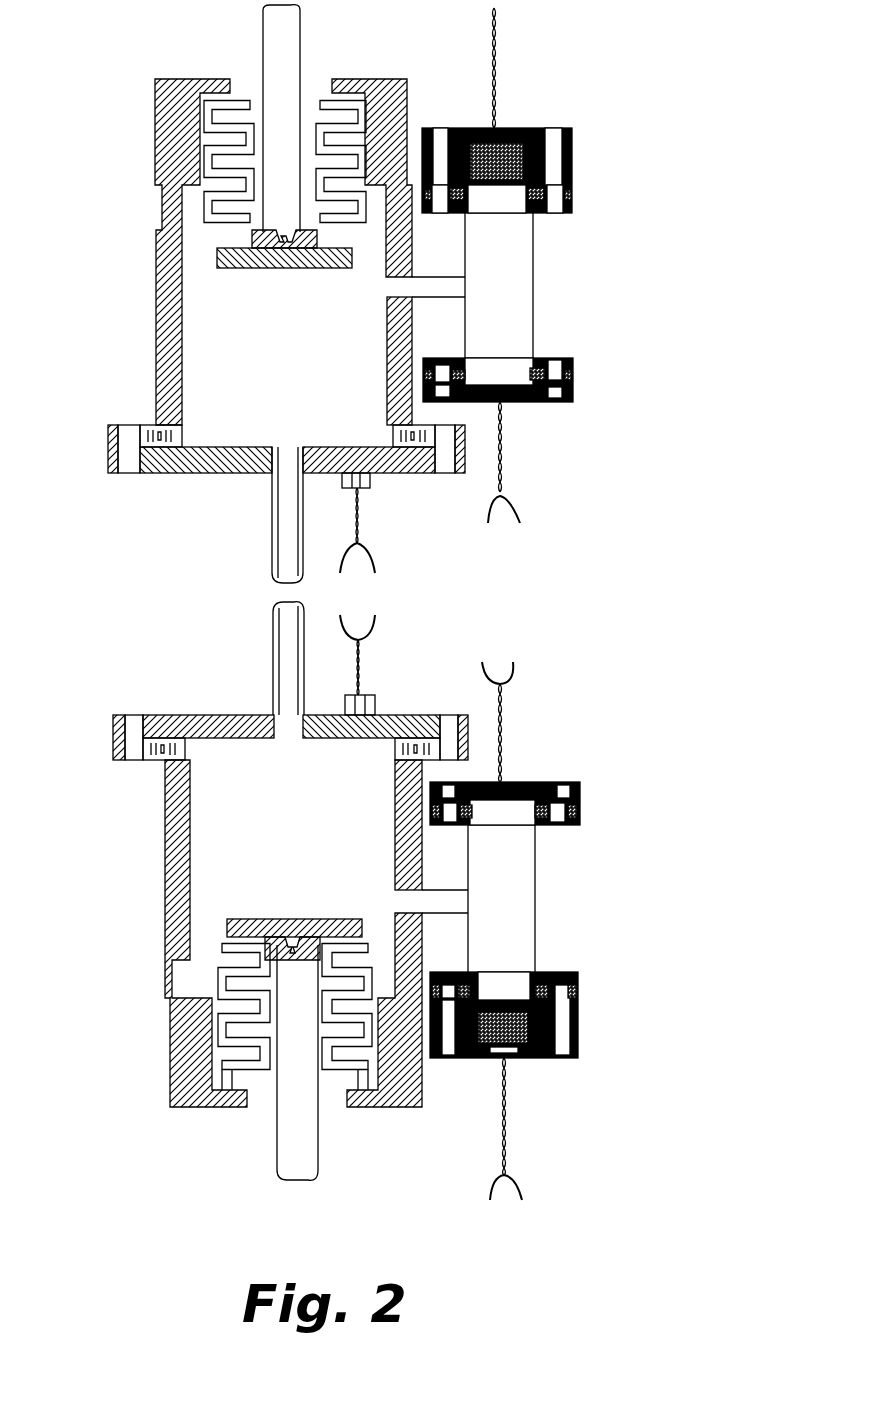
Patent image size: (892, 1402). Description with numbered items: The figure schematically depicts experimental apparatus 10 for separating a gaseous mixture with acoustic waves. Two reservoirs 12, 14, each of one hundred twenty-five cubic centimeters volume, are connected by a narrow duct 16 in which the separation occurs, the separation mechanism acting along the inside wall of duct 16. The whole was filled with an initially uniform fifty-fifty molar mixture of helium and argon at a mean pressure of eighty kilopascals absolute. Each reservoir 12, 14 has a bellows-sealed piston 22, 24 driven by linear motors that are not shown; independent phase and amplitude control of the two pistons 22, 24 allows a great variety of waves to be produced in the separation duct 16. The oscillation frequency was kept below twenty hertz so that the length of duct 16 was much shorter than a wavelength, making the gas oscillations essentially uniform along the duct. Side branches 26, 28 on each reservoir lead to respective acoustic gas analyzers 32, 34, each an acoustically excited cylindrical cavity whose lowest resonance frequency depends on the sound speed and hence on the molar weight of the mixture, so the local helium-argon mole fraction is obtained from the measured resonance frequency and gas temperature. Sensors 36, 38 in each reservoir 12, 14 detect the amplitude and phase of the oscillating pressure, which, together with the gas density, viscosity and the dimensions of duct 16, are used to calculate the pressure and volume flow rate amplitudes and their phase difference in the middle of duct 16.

The apparatus 10 is at (620, 580).
The reservoir 12 is at (312, 372).
The reservoir 14 is at (314, 846).
The duct 16 is at (288, 636).
The bellows-sealed piston 22 is at (212, 232).
The bellows-sealed piston 24 is at (222, 958).
The side branch 26 is at (422, 283).
The side branch 28 is at (455, 895).
The acoustic gas analyzer 32 is at (592, 160).
The acoustic gas analyzer 34 is at (592, 830).
The sensor 36 is at (366, 490).
The sensor 38 is at (362, 654).